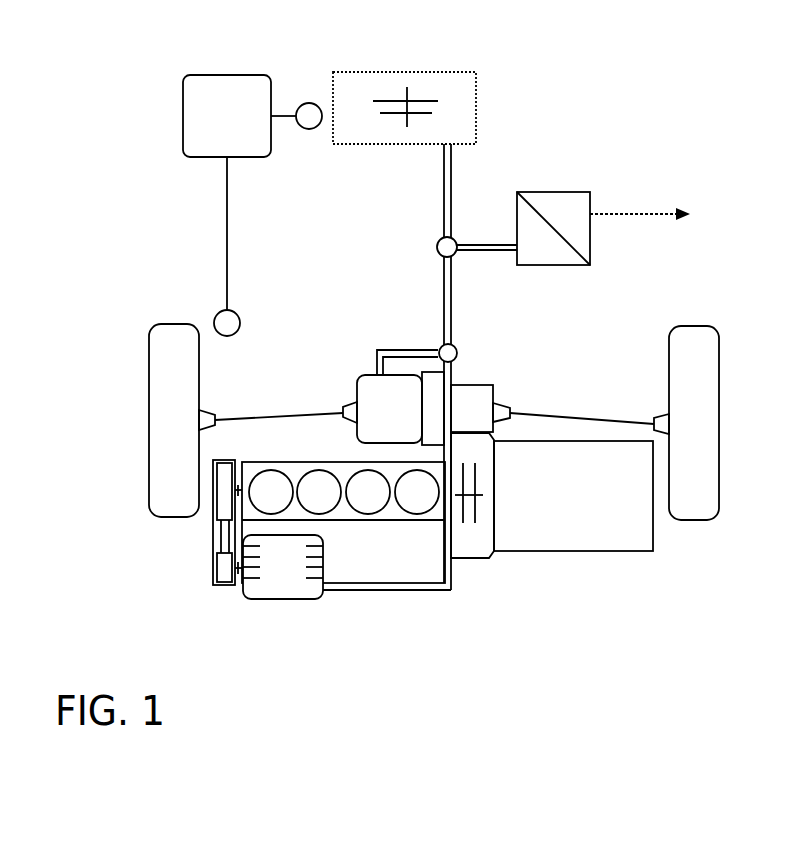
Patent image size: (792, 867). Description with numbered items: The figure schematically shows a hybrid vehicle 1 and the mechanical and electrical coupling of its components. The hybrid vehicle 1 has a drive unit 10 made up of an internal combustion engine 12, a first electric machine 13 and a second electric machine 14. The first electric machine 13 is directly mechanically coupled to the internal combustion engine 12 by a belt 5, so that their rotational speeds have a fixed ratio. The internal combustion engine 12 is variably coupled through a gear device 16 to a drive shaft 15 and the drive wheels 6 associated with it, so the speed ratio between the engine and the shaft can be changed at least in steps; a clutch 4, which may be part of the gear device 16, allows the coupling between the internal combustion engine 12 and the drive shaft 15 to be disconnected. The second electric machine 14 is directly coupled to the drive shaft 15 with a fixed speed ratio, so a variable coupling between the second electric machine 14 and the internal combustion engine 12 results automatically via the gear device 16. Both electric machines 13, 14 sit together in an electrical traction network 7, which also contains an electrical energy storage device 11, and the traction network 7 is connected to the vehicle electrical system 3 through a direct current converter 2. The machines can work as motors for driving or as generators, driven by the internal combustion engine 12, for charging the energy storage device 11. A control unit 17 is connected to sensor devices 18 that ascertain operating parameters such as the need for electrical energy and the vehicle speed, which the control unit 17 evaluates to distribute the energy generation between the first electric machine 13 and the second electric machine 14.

The hybrid vehicle 1 is at (606, 88).
The direct current converter 2 is at (557, 201).
The vehicle electrical system 3 is at (635, 214).
The clutch 4 is at (473, 548).
The belt 5 is at (220, 537).
The drive wheel 6 is at (163, 386).
The traction network 7 is at (446, 289).
The drive unit 10 is at (158, 223).
The energy storage device 11 is at (437, 85).
The internal combustion engine 12 is at (369, 497).
The first electric machine 13 is at (278, 590).
The second electric machine 14 is at (367, 383).
The drive shaft 15 is at (285, 417).
The gear device 16 is at (563, 536).
The control unit 17 is at (221, 85).
The sensor device 18 is at (308, 104).